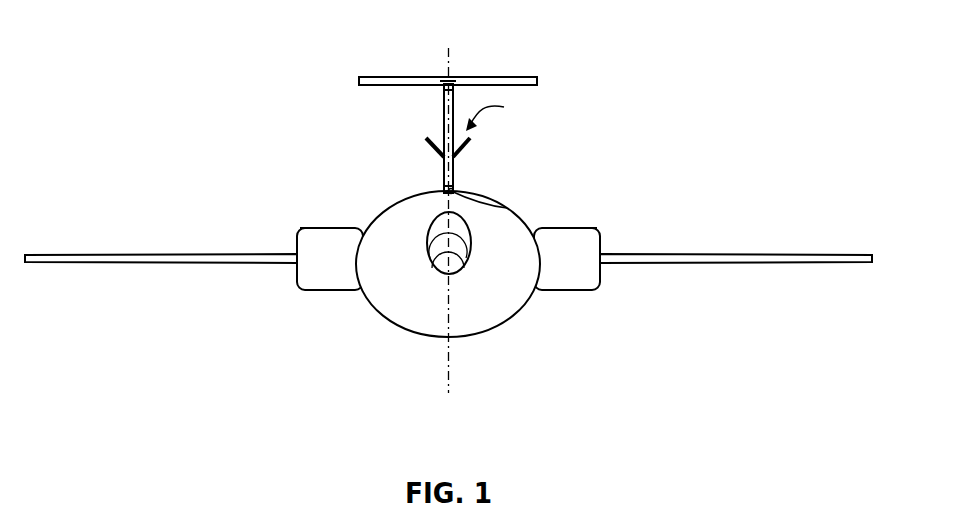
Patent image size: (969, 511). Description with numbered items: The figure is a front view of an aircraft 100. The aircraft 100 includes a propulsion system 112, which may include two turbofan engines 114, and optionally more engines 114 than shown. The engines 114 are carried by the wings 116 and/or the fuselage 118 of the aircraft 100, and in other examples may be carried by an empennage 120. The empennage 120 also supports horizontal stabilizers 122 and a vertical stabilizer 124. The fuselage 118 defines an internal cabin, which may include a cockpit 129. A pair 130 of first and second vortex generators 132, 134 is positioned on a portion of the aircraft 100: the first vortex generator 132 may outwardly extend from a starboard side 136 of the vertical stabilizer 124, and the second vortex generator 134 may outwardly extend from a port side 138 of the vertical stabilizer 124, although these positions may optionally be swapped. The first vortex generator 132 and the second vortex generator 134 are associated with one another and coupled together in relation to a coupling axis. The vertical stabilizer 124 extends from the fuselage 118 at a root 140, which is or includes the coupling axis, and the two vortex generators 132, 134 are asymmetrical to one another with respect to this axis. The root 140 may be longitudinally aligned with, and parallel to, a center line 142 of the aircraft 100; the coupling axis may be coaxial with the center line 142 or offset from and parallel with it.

The aircraft 100 is at (448, 206).
The propulsion system 112 is at (314, 292).
The turbofan engines 114 is at (308, 228).
The wings 116 is at (120, 254).
The fuselage 118 is at (490, 197).
The empennage 120 is at (451, 191).
The horizontal stabilizers 122 is at (406, 76).
The vertical stabilizer 124 is at (443, 108).
The cockpit 129 is at (437, 250).
The pair of vortex generators 130 is at (507, 111).
The first vortex generator 132 is at (437, 150).
The second vortex generator 134 is at (451, 191).
The starboard side 136 is at (447, 95).
The port side 138 is at (447, 95).
The root 140 is at (507, 208).
The center line 142 is at (449, 369).